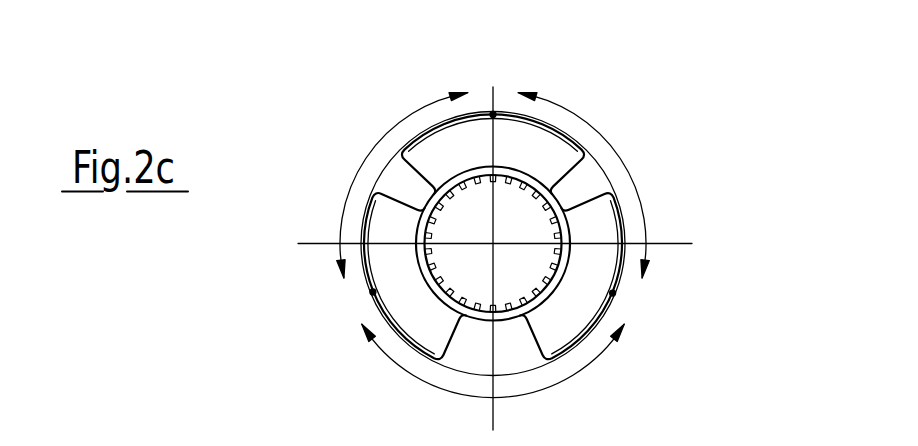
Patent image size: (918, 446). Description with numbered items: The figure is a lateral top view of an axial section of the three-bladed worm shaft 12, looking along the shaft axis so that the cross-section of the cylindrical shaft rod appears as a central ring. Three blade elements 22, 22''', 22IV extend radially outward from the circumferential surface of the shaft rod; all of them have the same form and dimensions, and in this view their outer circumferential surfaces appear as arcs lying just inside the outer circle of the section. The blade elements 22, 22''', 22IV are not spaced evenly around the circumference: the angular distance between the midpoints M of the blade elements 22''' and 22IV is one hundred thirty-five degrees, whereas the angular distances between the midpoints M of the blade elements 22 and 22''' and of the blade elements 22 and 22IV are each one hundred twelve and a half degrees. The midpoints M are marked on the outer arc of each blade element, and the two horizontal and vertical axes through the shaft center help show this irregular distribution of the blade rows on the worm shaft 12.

The worm shaft 12 is at (466, 250).
The blade element 22 is at (522, 131).
The blade element 22''' is at (626, 276).
The blade element 22IV is at (420, 323).
The midpoint M is at (493, 114).